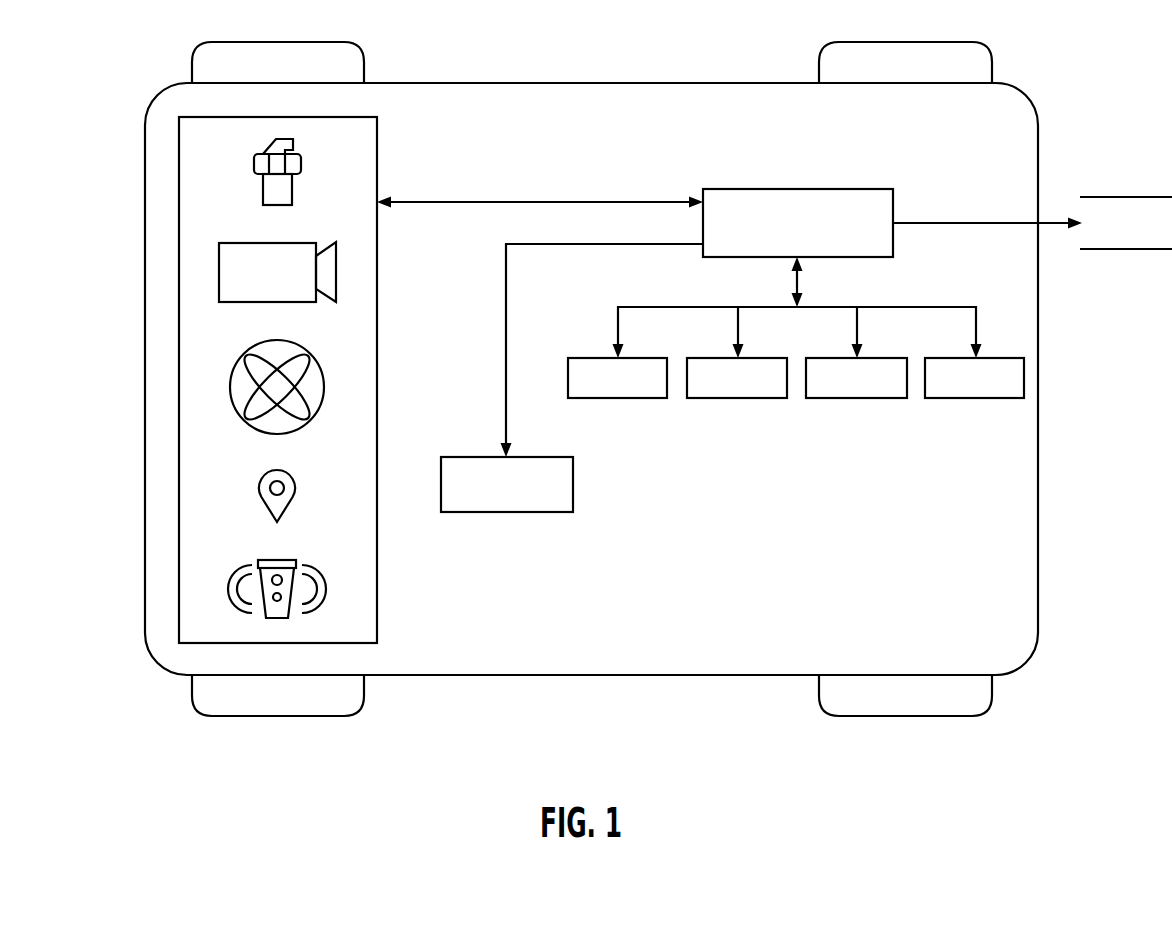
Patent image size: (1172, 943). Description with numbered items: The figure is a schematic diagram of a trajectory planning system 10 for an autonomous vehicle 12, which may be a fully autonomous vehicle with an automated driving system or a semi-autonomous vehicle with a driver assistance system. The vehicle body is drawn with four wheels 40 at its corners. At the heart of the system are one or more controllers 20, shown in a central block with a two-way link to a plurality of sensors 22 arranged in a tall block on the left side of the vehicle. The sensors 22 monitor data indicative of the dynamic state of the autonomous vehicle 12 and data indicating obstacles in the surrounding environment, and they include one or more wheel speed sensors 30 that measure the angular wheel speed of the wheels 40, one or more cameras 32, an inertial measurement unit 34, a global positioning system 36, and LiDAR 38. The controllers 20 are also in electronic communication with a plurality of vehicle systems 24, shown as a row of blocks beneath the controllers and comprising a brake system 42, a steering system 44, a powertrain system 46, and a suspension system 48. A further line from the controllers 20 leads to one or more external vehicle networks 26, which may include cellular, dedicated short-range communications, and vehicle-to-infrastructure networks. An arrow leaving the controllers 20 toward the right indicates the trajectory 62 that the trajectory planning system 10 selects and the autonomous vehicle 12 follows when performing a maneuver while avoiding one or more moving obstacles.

The trajectory planning system 10 is at (625, 381).
The autonomous vehicle 12 is at (590, 83).
The controllers 20 is at (813, 238).
The plurality of sensors 22 is at (377, 152).
The vehicle systems 24 is at (1013, 340).
The external vehicle networks 26 is at (523, 500).
The wheel speed sensors 30 is at (264, 151).
The cameras 32 is at (268, 243).
The inertial measurement unit 34 is at (277, 342).
The global positioning system 36 is at (275, 470).
The LiDAR 38 is at (277, 560).
The wheels 40 is at (248, 42).
The brake system 42 is at (634, 393).
The steering system 44 is at (753, 393).
The powertrain system 46 is at (873, 393).
The suspension system 48 is at (991, 393).
The trajectory 62 is at (1136, 238).